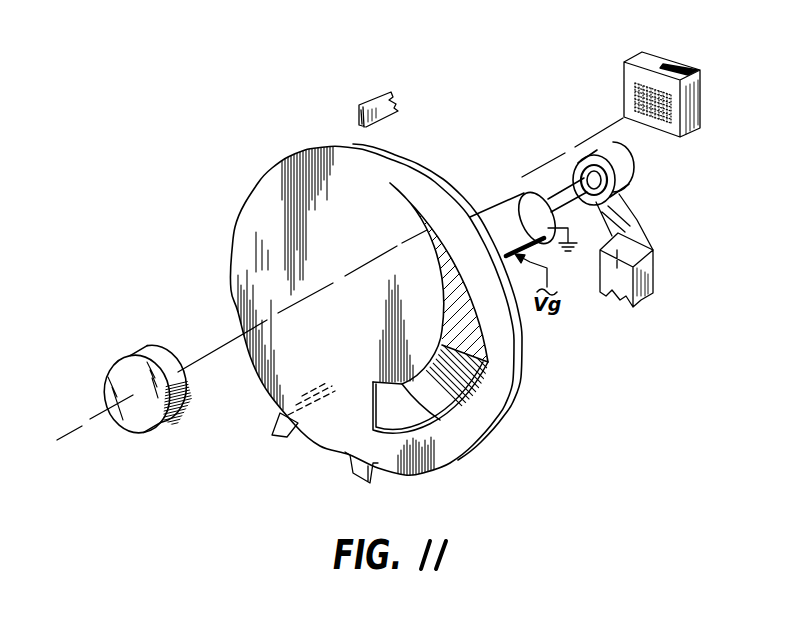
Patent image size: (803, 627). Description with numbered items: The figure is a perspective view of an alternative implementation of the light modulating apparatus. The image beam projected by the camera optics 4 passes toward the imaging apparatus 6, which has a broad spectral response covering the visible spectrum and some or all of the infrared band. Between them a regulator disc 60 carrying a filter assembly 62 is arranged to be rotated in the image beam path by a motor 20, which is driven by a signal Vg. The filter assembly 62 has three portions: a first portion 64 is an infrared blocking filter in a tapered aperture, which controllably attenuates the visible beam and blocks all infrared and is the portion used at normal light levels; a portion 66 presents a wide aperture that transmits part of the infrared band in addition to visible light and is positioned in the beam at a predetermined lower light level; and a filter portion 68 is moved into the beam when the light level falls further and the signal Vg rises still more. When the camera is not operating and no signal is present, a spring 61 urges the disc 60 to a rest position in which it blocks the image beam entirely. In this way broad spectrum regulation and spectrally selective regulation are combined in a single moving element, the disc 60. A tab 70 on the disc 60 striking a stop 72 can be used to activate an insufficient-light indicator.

The camera optics 4 is at (142, 428).
The imaging apparatus 6 is at (624, 84).
The motor 20 is at (501, 204).
The regulator disc 60 is at (321, 150).
The spring 61 is at (633, 168).
The filter assembly 62 is at (505, 291).
The first portion of the filter assembly 64 is at (486, 347).
The portion of the filter assembly 66 is at (468, 388).
The filter portion 68 is at (430, 412).
The tab 70 is at (358, 478).
The stop 72 is at (379, 98).